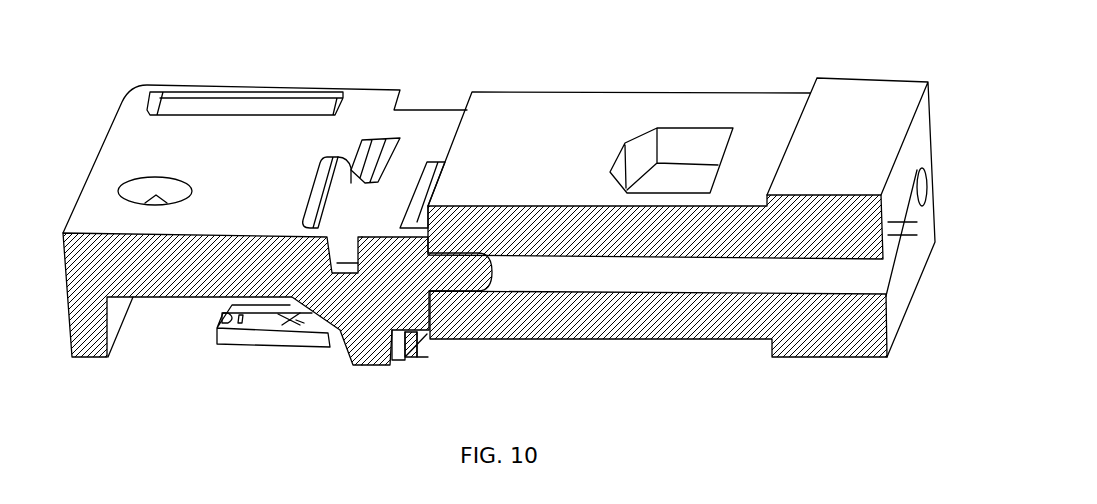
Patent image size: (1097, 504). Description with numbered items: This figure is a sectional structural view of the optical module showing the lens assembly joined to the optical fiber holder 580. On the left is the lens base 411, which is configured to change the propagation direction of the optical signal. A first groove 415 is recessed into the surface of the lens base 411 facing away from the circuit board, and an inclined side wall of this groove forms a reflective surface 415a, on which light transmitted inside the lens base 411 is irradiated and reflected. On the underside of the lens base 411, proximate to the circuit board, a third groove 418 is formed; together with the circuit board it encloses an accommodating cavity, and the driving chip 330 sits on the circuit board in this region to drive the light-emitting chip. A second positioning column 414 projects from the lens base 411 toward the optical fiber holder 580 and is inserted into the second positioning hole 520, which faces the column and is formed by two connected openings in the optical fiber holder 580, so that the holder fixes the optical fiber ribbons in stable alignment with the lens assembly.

The lens base 411 is at (187, 138).
The second positioning column 414 is at (470, 290).
The first groove 415 is at (343, 193).
The reflective surface 415a is at (337, 263).
The third groove 418 is at (170, 313).
The driving chip 330 is at (265, 313).
The second positioning hole 520 is at (697, 280).
The optical fiber holder 580 is at (577, 148).